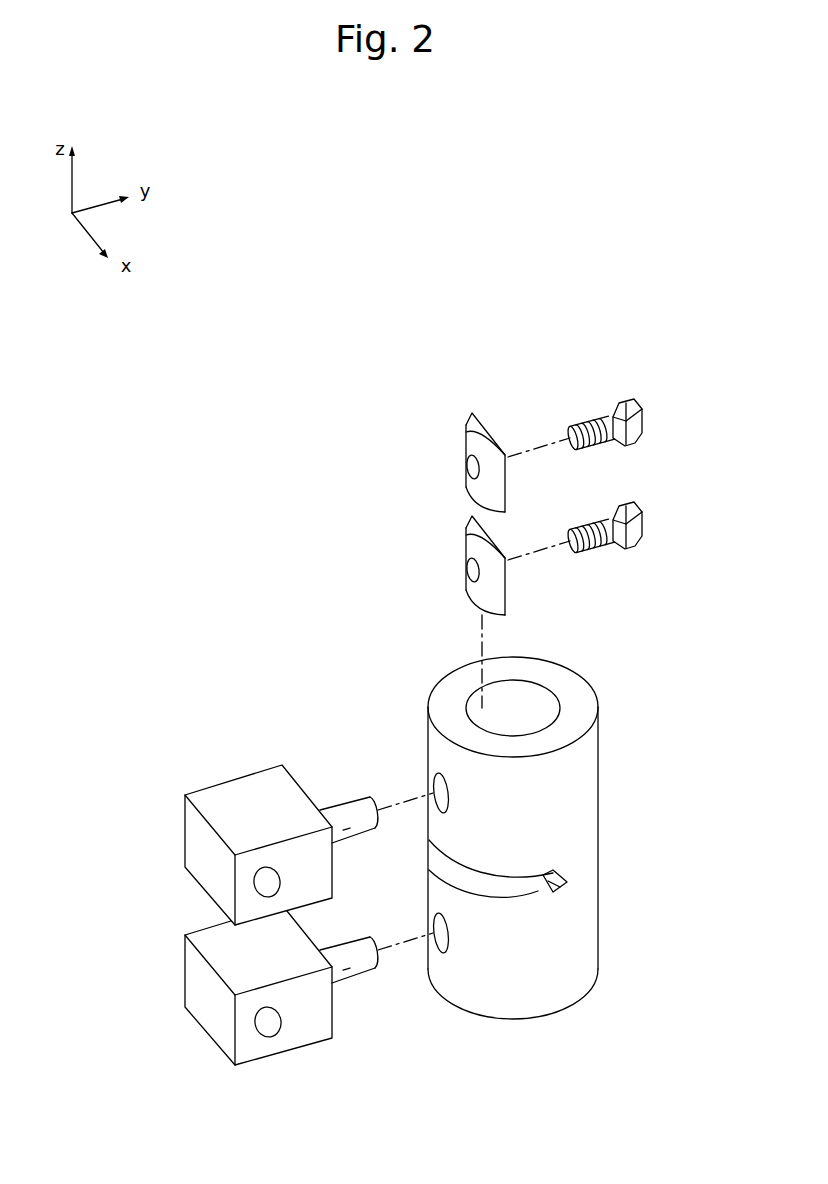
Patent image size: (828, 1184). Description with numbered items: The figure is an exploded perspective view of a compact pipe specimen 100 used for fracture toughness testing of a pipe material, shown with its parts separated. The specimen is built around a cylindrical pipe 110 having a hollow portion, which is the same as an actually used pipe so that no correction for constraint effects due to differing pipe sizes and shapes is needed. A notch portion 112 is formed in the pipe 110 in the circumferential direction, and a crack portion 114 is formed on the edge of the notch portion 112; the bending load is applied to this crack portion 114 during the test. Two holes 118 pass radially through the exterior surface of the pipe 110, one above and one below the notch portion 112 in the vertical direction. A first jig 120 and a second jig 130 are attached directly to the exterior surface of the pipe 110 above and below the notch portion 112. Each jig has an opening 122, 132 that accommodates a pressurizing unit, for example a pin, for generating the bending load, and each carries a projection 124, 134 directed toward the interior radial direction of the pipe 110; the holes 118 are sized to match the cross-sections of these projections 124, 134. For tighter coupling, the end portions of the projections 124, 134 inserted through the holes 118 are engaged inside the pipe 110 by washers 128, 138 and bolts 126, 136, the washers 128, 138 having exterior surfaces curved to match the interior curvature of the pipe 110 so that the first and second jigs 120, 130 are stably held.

The compact pipe specimen 100 is at (354, 434).
The pipe 110 is at (580, 780).
The notch portion 112 is at (540, 891).
The crack portion 114 is at (583, 870).
The holes 118 is at (433, 787).
The first jig 120 is at (195, 843).
The opening 122 is at (275, 878).
The projection 124 is at (350, 810).
The bolt 126 is at (597, 418).
The washer 128 is at (465, 445).
The second jig 130 is at (212, 1017).
The opening 132 is at (273, 1032).
The projection 134 is at (355, 980).
The bolt 136 is at (607, 548).
The washer 138 is at (473, 590).